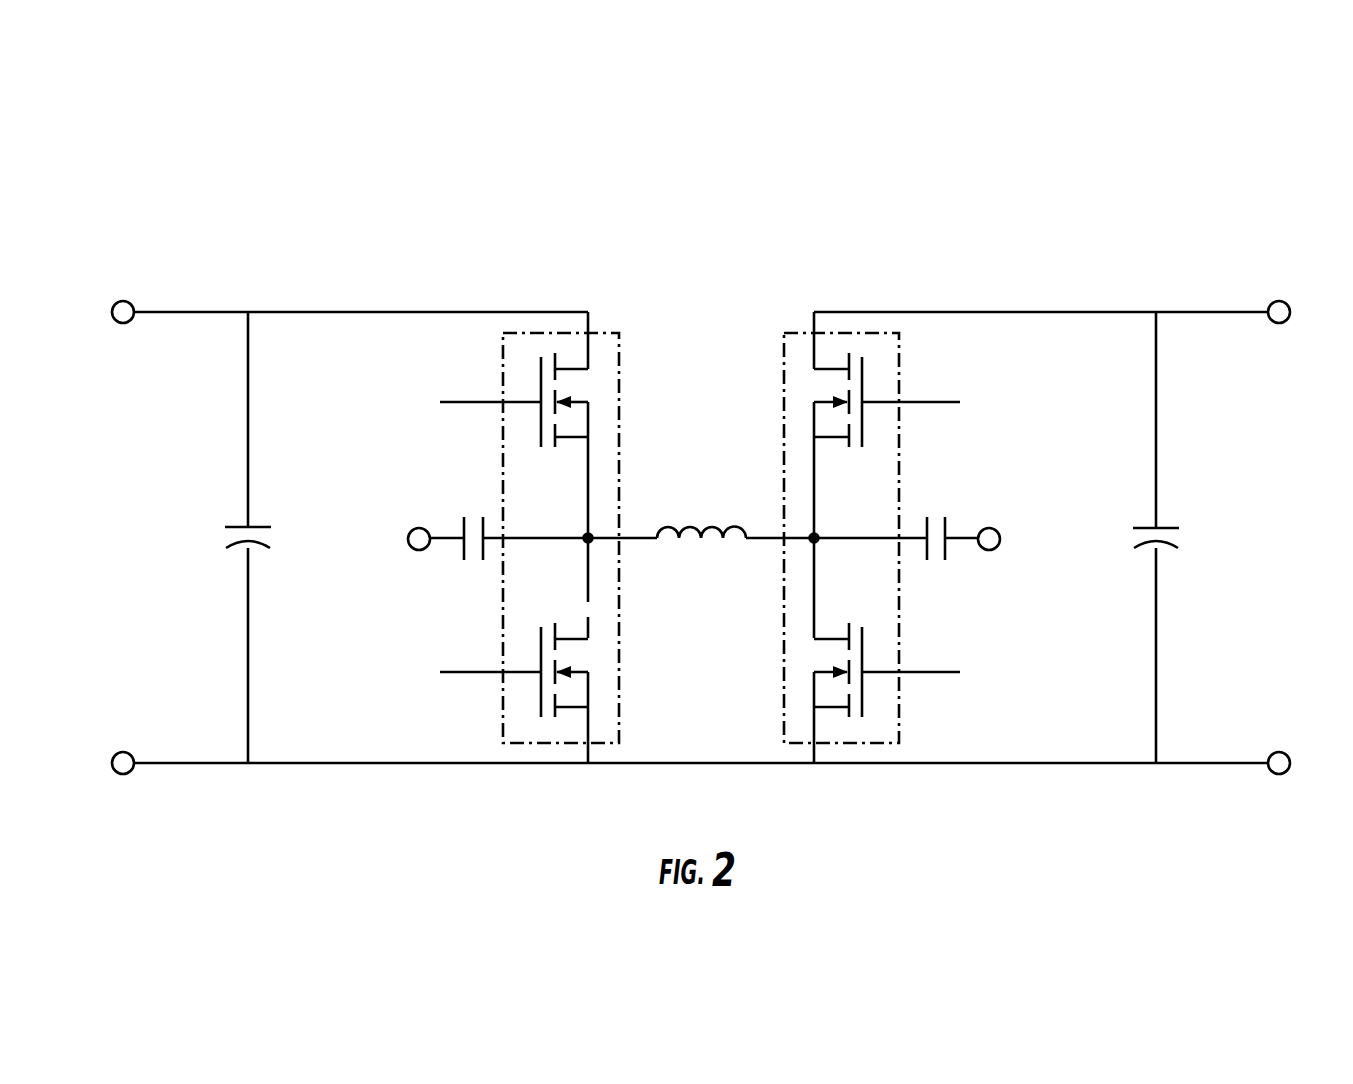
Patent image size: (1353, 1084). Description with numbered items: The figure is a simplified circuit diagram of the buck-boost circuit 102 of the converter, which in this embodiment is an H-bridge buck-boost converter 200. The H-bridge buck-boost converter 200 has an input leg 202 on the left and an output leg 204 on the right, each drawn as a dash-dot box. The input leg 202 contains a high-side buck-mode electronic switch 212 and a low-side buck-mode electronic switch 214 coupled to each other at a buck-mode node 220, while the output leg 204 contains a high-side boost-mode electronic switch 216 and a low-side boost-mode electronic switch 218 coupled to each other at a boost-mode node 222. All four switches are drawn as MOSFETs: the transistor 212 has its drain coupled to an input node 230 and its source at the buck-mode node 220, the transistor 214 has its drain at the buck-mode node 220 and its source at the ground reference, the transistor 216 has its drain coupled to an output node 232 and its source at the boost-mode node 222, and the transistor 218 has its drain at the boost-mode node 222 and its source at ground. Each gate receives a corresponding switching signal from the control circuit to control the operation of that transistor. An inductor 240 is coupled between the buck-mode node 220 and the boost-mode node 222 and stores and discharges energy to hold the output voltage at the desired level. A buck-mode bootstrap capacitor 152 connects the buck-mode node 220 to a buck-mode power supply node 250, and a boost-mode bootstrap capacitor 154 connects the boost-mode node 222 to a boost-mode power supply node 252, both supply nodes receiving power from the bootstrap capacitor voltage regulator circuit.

The buck-boost circuit 102 is at (908, 170).
The H-bridge buck-boost converter 200 is at (707, 262).
The input leg 202 is at (608, 333).
The output leg 204 is at (784, 343).
The high-side buck-mode electronic switch 212 is at (600, 388).
The low-side buck-mode electronic switch 214 is at (602, 668).
The high-side boost-mode electronic switch 216 is at (800, 393).
The low-side boost-mode electronic switch 218 is at (800, 672).
The buck-mode node 220 is at (588, 540).
The boost-mode node 222 is at (810, 535).
The inductor 240 is at (690, 527).
The input node 230 is at (124, 300).
The output node 232 is at (1279, 300).
The buck-mode power supply node 250 is at (419, 528).
The boost-mode power supply node 252 is at (1000, 535).
The buck-mode bootstrap capacitor 152 is at (462, 556).
The boost-mode bootstrap capacitor 154 is at (947, 548).